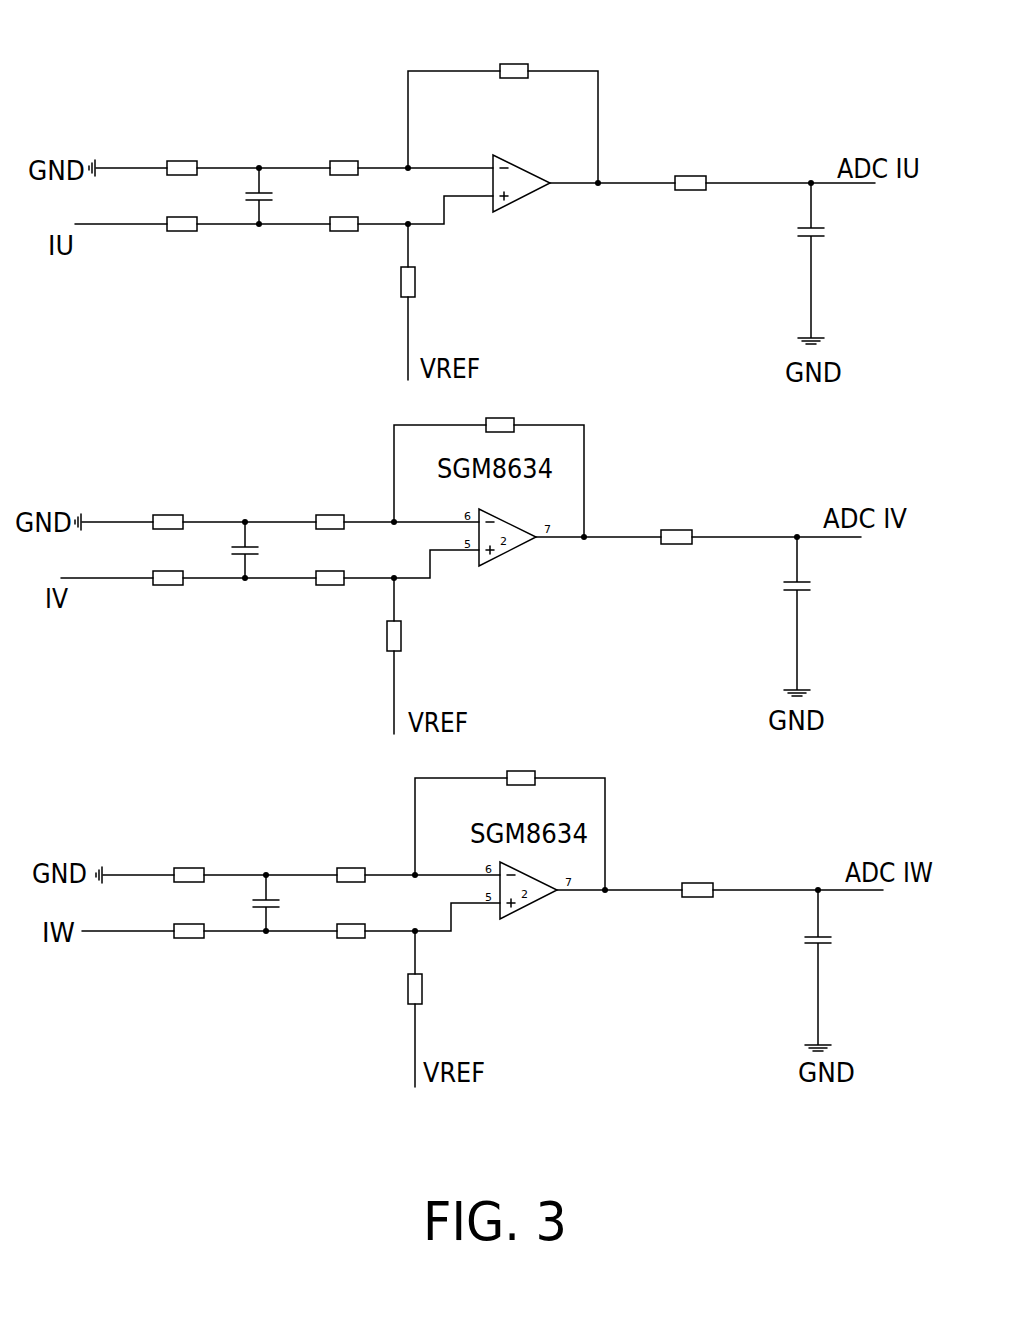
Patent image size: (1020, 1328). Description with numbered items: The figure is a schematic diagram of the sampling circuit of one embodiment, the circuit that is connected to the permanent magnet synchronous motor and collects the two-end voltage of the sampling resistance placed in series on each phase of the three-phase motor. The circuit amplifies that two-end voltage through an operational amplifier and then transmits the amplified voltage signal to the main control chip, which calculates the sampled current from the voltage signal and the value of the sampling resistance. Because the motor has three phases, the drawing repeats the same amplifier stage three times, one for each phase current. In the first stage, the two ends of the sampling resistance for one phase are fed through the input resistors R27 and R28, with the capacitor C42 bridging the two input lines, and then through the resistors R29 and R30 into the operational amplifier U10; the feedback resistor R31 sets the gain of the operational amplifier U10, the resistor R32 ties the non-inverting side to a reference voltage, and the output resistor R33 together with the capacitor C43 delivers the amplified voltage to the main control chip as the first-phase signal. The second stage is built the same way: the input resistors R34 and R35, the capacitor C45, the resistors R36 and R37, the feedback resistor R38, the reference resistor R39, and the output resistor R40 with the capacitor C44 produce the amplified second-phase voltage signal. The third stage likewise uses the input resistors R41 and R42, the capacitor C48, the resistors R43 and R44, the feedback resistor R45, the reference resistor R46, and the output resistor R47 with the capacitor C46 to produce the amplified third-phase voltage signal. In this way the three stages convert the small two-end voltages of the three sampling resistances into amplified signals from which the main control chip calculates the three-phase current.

The resistor R27 1K R27 is at (180, 139).
The resistor R28 1K R28 is at (181, 255).
The resistor R29 1K R29 is at (342, 139).
The resistor R30 1K R30 is at (351, 256).
The feedback resistor R31 3.3K R31 is at (503, 99).
The resistor R32 1K to VREF R32 is at (433, 302).
The output resistor R33 1K R33 is at (685, 155).
The capacitor C42 100nF C42 is at (280, 219).
The capacitor C43 0.1uF C43 is at (842, 263).
The operational amplifier U10 SGM8634 U10 is at (521, 149).
The resistor R34 1K R34 is at (169, 496).
The resistor R35 1K R35 is at (163, 608).
The resistor R36 1K R36 is at (331, 496).
The resistor R37 1K R37 is at (332, 608).
The feedback resistor R38 3.3K R38 is at (489, 453).
The resistor R39 1K to VREF R39 is at (420, 656).
The output resistor R40 1K R40 is at (675, 510).
The capacitor C45 100nF C45 is at (265, 570).
The capacitor C44 0.1uF C44 is at (828, 616).
The resistor R41 1K R41 is at (190, 848).
The resistor R42 1K R42 is at (190, 961).
The resistor R43 1K R43 is at (351, 848).
The resistor R44 1K R44 is at (351, 961).
The feedback resistor R45 3.3K R45 is at (510, 805).
The resistor R46 1K to VREF R46 is at (440, 1009).
The output resistor R47 1K R47 is at (705, 864).
The capacitor C48 100nF C48 is at (280, 925).
The capacitor C46 0.1uF C46 is at (850, 970).